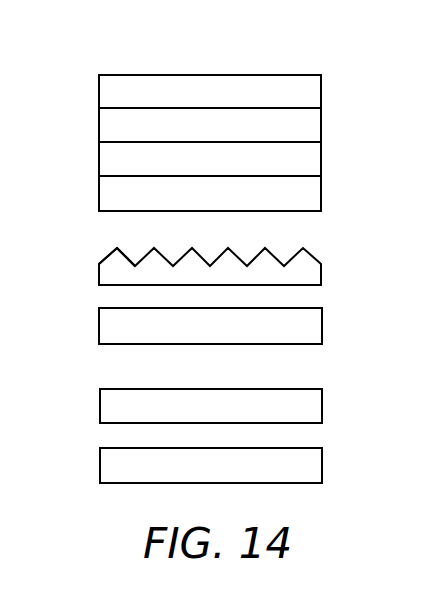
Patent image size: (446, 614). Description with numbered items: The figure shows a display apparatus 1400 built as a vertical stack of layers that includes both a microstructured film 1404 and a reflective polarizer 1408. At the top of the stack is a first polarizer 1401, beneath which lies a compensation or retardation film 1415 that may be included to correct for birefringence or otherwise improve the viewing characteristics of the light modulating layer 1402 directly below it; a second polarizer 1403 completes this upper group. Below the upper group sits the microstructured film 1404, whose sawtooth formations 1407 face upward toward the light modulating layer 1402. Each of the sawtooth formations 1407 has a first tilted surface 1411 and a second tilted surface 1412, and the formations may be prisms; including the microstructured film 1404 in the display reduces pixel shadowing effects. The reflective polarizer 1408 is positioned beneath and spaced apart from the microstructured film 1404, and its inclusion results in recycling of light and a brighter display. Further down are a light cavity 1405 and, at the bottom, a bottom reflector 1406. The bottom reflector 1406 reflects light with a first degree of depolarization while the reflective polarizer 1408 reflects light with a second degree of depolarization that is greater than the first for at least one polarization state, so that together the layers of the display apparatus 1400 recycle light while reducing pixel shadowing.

The display apparatus 1400 is at (275, 46).
The first polarizer 1401 is at (321, 90).
The compensation or retardation film 1415 is at (321, 124).
The light modulating layer 1402 is at (321, 157).
The second polarizer 1403 is at (321, 192).
The microstructured film 1404 is at (321, 273).
The first tilted surface 1411 is at (118, 253).
The second tilted surface 1412 is at (125, 250).
The sawtooth formations 1407 is at (98, 263).
The reflective polarizer 1408 is at (322, 323).
The light cavity 1405 is at (322, 404).
The bottom reflector 1406 is at (322, 467).